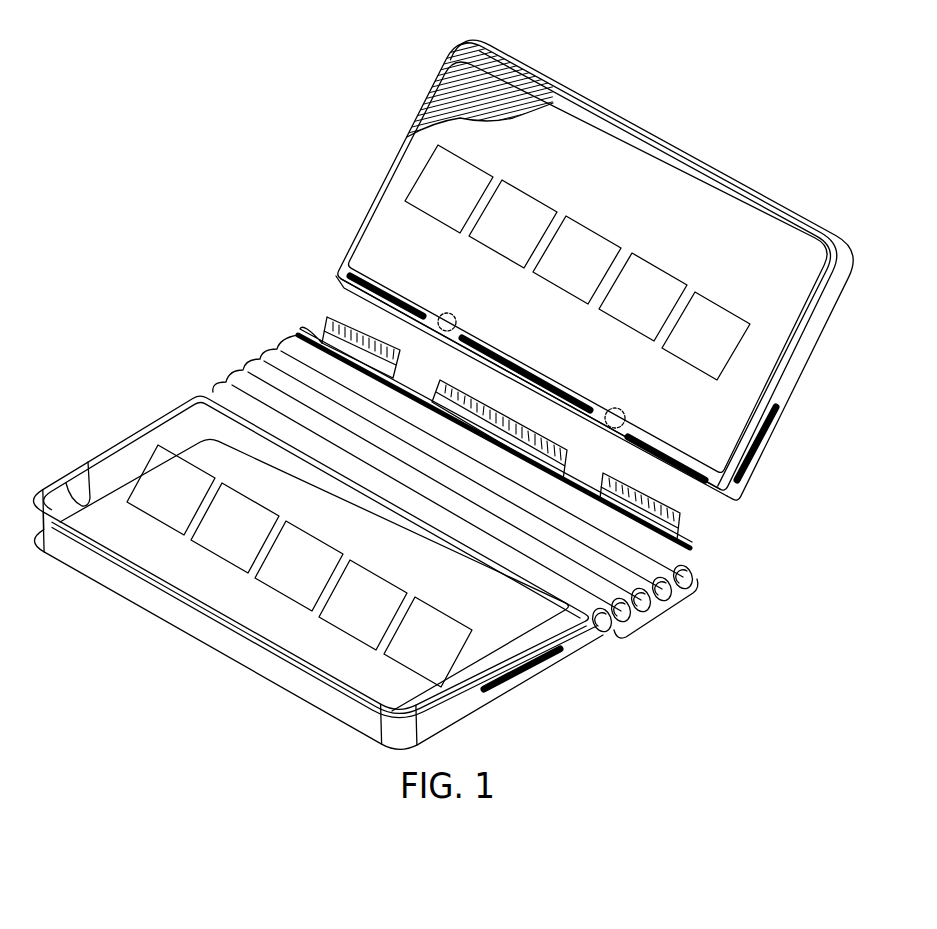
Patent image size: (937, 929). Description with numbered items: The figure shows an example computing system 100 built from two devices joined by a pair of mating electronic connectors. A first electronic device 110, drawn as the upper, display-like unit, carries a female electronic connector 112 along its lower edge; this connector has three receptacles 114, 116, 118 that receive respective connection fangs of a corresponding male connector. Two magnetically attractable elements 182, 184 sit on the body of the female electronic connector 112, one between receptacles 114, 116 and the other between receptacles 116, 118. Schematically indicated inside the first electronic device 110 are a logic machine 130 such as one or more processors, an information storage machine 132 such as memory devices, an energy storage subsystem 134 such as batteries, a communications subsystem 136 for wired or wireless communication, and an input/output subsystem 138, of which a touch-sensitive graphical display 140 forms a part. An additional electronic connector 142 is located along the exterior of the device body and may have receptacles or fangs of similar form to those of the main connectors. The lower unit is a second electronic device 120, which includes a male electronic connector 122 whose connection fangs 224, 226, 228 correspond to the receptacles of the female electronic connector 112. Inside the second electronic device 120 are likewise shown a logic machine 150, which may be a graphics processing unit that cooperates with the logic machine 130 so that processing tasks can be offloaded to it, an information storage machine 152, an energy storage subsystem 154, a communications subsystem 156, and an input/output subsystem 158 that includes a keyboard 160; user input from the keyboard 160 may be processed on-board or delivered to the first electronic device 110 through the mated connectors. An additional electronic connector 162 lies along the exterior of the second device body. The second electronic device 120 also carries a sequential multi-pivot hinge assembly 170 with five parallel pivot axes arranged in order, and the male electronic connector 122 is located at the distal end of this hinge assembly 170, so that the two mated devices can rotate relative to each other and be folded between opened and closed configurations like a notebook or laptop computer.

The computing system 100 is at (294, 62).
The first electronic device 110 is at (508, 56).
The female electronic connector 112 is at (332, 285).
The receptacle 114 is at (418, 318).
The receptacle 116 is at (585, 412).
The receptacle 118 is at (700, 484).
The second electronic device 120 is at (175, 410).
The male electronic connector 122 is at (315, 310).
The logic machine 130 is at (462, 168).
The information storage machine 132 is at (527, 206).
The energy storage subsystem 134 is at (587, 243).
The communications subsystem 136 is at (652, 281).
The input/output subsystem 138 is at (717, 316).
The touch-sensitive graphical display 140 is at (437, 95).
The additional electronic connector 142 is at (768, 420).
The logic machine 150 is at (184, 471).
The information storage machine 152 is at (249, 511).
The energy storage subsystem 154 is at (307, 546).
The communications subsystem 156 is at (372, 585).
The input/output subsystem 158 is at (437, 623).
The keyboard 160 is at (66, 483).
The additional electronic connector 162 is at (537, 660).
The sequential multi-pivot hinge assembly 170 is at (667, 620).
The magnetically attractable element 182 is at (455, 316).
The magnetically attractable element 184 is at (623, 412).
The first connector tab 224 is at (327, 322).
The second connector tab 226 is at (563, 455).
The third connector tab 228 is at (678, 515).